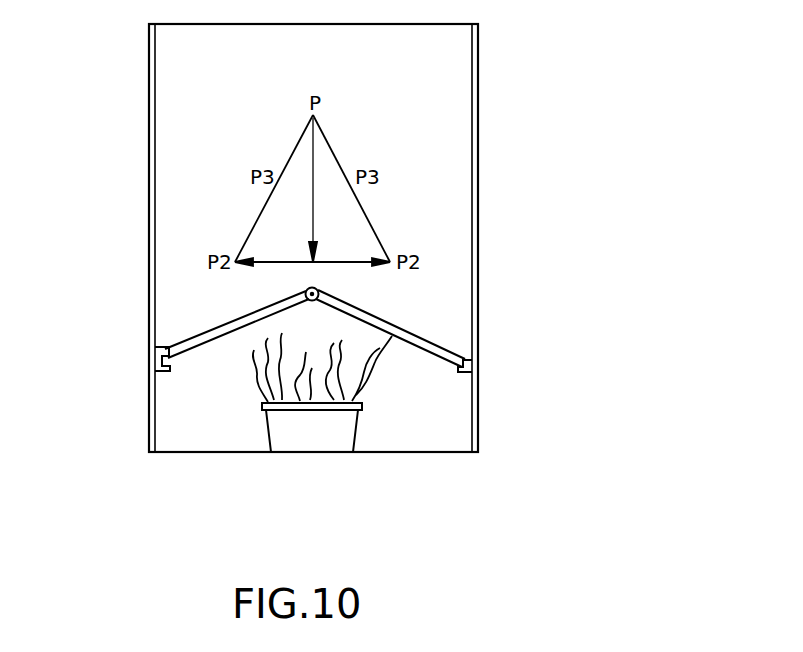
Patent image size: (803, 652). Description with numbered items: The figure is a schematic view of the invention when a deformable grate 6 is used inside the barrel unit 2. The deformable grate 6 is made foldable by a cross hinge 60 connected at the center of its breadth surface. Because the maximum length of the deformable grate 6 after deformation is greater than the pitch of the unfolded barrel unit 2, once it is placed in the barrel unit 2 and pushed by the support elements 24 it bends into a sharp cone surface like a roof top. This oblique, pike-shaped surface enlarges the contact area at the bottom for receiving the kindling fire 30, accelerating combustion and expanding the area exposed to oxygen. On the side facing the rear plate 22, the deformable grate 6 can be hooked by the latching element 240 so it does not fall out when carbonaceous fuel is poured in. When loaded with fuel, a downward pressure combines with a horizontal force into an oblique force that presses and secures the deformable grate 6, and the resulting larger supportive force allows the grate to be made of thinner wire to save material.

The barrel unit 2 is at (500, 400).
The deformable grate 6 is at (397, 330).
The rear plate 22 is at (148, 93).
The support element 24 is at (460, 380).
The kindling fire 30 is at (307, 437).
The cross hinge 60 is at (306, 300).
The latching element 240 is at (163, 346).